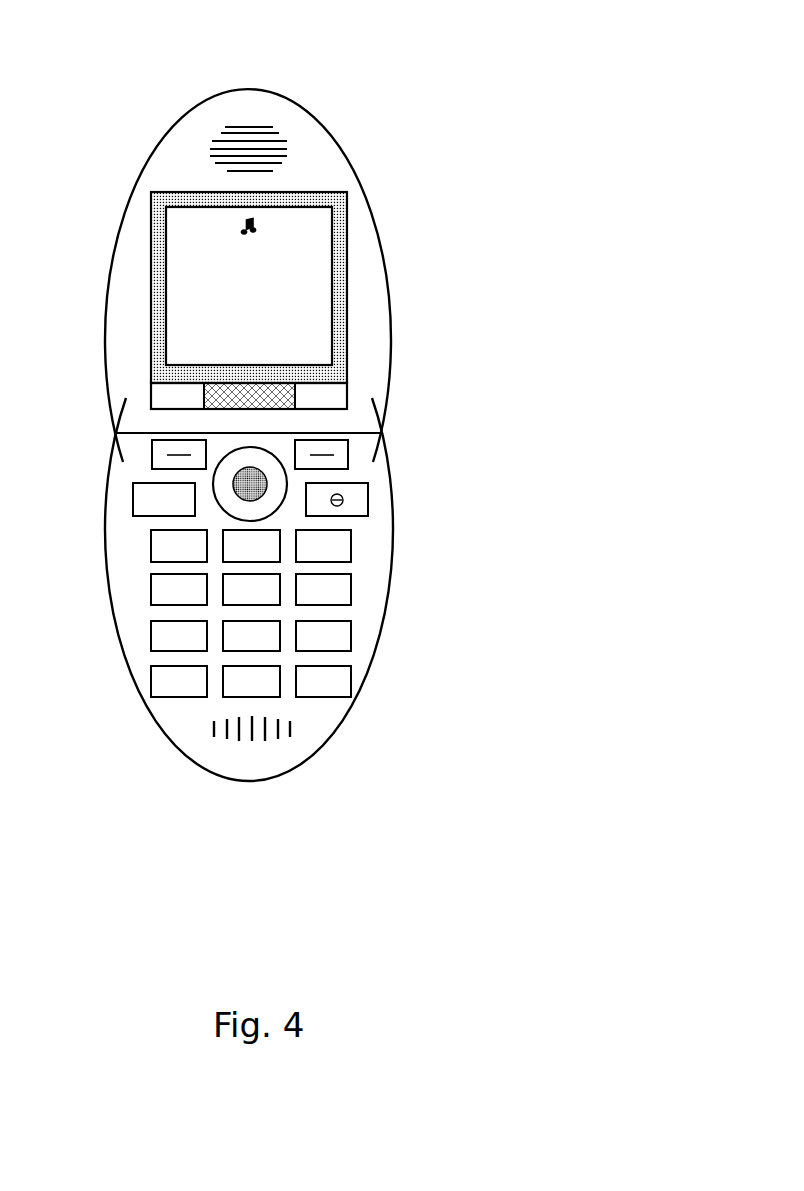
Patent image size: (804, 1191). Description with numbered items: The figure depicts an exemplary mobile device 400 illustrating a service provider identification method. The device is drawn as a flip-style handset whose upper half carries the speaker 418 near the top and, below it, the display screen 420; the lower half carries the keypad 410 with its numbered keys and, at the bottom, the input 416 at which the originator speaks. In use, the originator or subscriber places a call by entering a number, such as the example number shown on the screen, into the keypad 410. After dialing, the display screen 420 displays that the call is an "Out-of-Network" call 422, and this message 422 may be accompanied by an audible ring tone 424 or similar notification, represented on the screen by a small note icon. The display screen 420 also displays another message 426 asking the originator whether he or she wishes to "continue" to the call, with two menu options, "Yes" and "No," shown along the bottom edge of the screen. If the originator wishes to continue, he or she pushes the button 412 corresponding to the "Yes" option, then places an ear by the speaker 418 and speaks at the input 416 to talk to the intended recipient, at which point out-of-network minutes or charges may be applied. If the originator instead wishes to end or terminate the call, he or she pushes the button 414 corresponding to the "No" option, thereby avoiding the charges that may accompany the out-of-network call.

The mobile device 400 is at (474, 36).
The keypad 410 is at (365, 572).
The button 412 is at (152, 452).
The button 414 is at (348, 453).
The input 416 is at (283, 735).
The speaker 418 is at (273, 133).
The display screen 420 is at (348, 198).
The "Out-of-Network" call message 422 is at (318, 285).
The audible ring tone 424 is at (237, 226).
The message 426 is at (308, 349).